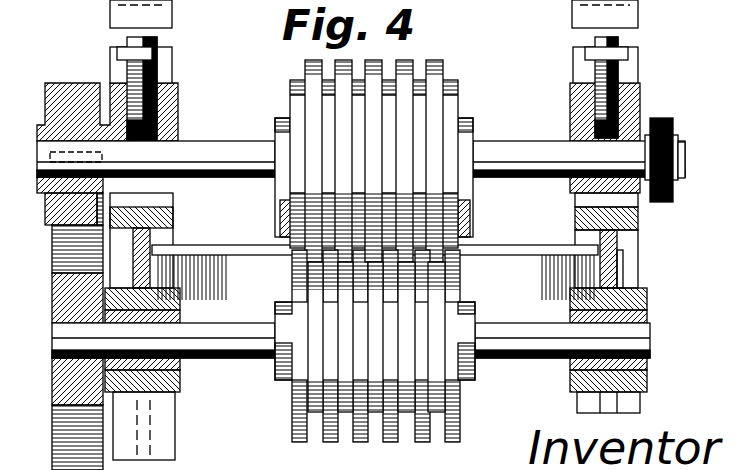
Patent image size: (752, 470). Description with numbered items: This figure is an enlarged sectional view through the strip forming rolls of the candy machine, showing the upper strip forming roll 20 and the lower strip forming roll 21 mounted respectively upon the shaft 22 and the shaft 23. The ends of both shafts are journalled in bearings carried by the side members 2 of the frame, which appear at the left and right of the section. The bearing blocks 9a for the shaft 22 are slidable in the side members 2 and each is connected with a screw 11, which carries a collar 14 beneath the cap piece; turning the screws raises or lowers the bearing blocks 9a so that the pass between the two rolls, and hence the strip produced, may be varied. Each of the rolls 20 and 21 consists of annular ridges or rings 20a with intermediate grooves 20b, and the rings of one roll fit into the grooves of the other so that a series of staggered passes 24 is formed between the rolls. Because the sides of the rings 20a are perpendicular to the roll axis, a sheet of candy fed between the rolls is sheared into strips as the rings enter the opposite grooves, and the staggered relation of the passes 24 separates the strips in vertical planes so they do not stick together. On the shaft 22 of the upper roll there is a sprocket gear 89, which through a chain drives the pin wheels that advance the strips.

The side members 2 is at (67, 290).
The bearing blocks 9a is at (110, 90).
The screw 11 is at (157, 67).
The collar 14 is at (128, 52).
The strip forming roll 20 is at (450, 95).
The annular ridges or rings 20a is at (427, 62).
The intermediate grooves 20b is at (358, 63).
The strip forming roll 21 is at (462, 398).
The shaft 22 is at (200, 147).
The shaft 23 is at (215, 343).
The staggered passes 24 is at (283, 246).
The sprocket gear 89 is at (673, 128).